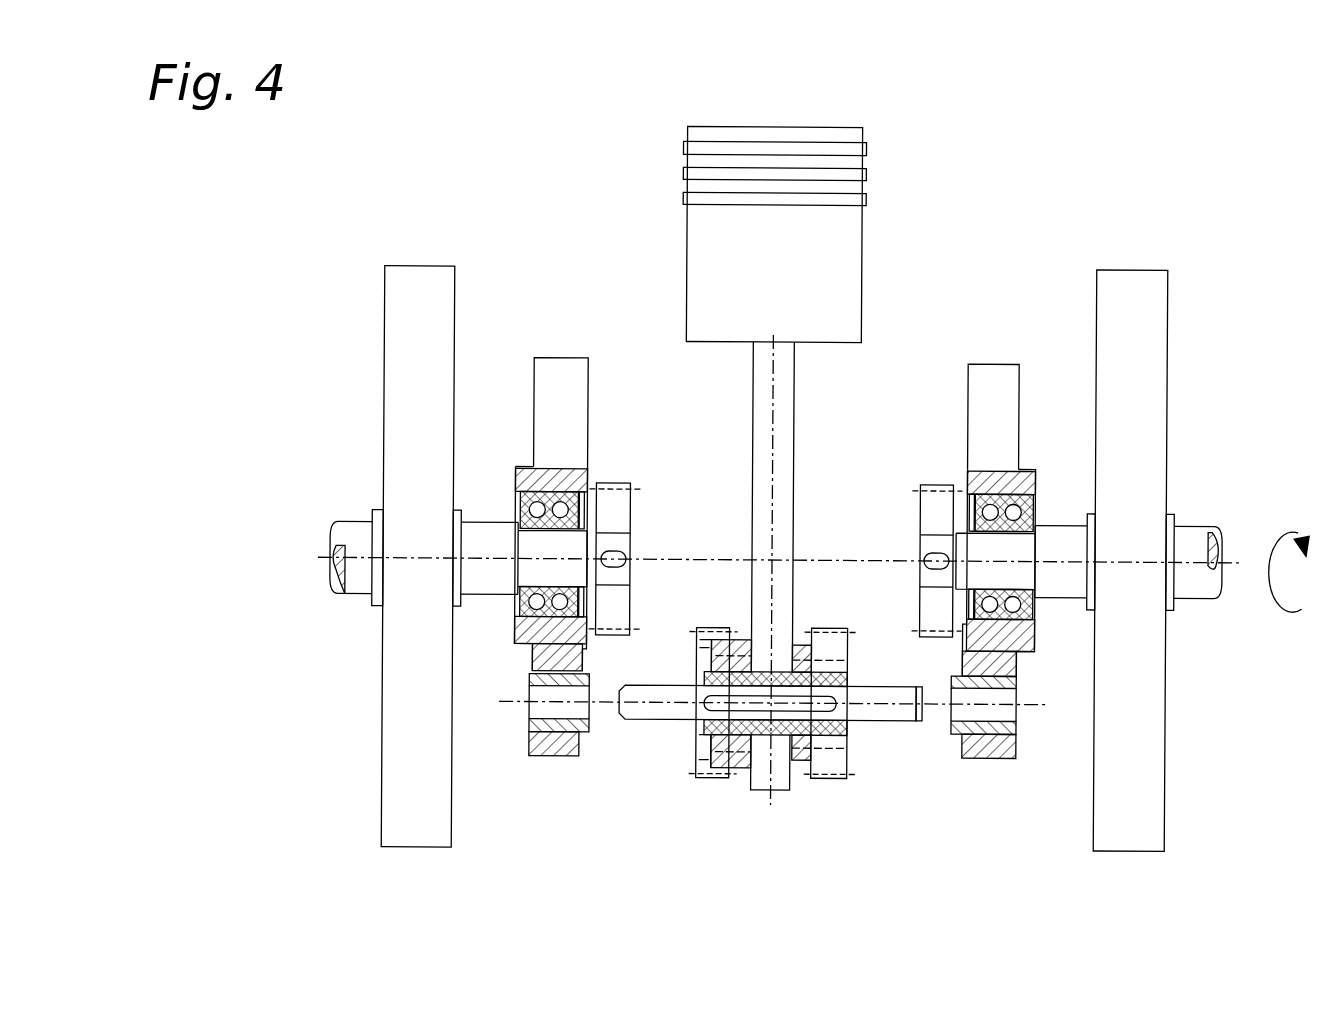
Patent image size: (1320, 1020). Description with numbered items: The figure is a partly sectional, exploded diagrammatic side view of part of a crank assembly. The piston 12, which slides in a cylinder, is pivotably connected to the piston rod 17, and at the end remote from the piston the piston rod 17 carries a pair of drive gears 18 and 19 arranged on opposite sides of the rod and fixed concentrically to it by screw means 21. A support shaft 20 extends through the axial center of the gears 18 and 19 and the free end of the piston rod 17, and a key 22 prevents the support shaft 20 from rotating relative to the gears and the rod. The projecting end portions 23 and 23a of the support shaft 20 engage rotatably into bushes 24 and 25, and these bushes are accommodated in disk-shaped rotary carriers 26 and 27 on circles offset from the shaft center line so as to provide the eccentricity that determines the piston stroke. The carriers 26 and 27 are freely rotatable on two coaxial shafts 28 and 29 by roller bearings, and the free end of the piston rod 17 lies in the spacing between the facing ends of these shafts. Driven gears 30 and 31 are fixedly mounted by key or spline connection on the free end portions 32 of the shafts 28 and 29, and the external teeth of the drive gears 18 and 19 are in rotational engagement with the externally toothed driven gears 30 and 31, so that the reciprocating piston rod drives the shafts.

The piston 12 is at (830, 232).
The piston rod 17 is at (778, 400).
The drive gear 18 is at (725, 778).
The drive gear 19 is at (822, 760).
The support shaft 20 is at (880, 713).
The screw means 21 is at (693, 735).
The key 22 is at (795, 708).
The projecting end portion 23 is at (636, 721).
The projecting end portion 23a is at (910, 722).
The bush 24 is at (540, 705).
The bush 25 is at (1003, 712).
The rotary carrier 26 is at (568, 385).
The rotary carrier 27 is at (980, 377).
The shaft 28 is at (352, 524).
The shaft 29 is at (1197, 538).
The driven gear 30 is at (608, 497).
The driven gear 31 is at (940, 503).
The free end portion 32 is at (643, 547).